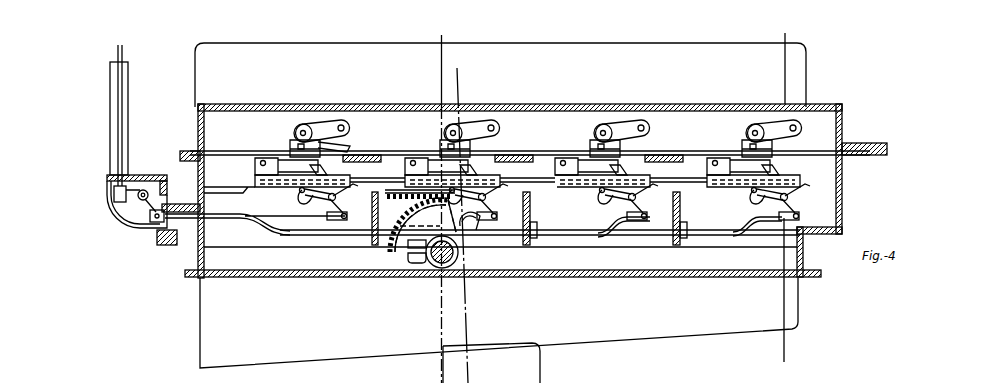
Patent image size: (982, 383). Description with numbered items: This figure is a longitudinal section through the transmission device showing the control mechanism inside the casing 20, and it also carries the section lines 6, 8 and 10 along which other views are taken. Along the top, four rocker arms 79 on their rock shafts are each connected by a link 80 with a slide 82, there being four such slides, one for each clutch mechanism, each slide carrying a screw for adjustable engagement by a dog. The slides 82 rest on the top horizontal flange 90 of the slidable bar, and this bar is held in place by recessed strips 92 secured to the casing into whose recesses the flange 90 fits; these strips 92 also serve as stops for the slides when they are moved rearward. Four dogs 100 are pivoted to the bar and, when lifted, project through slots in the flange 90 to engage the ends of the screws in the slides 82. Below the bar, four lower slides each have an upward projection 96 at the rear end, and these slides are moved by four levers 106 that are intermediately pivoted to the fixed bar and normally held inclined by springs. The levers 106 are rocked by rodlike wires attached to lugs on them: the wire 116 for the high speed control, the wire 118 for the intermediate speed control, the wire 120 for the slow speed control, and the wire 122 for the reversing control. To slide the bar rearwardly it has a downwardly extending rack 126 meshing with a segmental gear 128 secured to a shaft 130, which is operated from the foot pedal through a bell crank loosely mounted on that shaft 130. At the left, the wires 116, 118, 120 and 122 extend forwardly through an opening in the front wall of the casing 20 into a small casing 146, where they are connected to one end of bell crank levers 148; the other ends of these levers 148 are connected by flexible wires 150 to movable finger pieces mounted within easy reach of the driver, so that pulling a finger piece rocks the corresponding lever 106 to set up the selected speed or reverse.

The section line 6— 6 is at (455, 35).
The section line 8— 8 is at (771, 33).
The section line 10— 10 is at (453, 68).
The casing 20 is at (838, 108).
The rocker arm 79 is at (348, 143).
The link 80 is at (325, 126).
The slide 82 is at (293, 140).
The top horizontal flange 90 is at (401, 150).
The recessed strips 92 is at (372, 154).
The upward projection 96 is at (322, 170).
The dogs 100 is at (272, 160).
The levers 106 is at (319, 219).
The wire 116 is at (277, 218).
The wire 118 is at (469, 214).
The wire 120 is at (606, 222).
The wire 122 is at (733, 232).
The rack 126 is at (395, 192).
The segmental gear 128 is at (407, 246).
The shaft 130 is at (438, 264).
The small casing 146 is at (116, 217).
The bell crank levers 148 is at (136, 205).
The flexible wires 150 is at (116, 143).